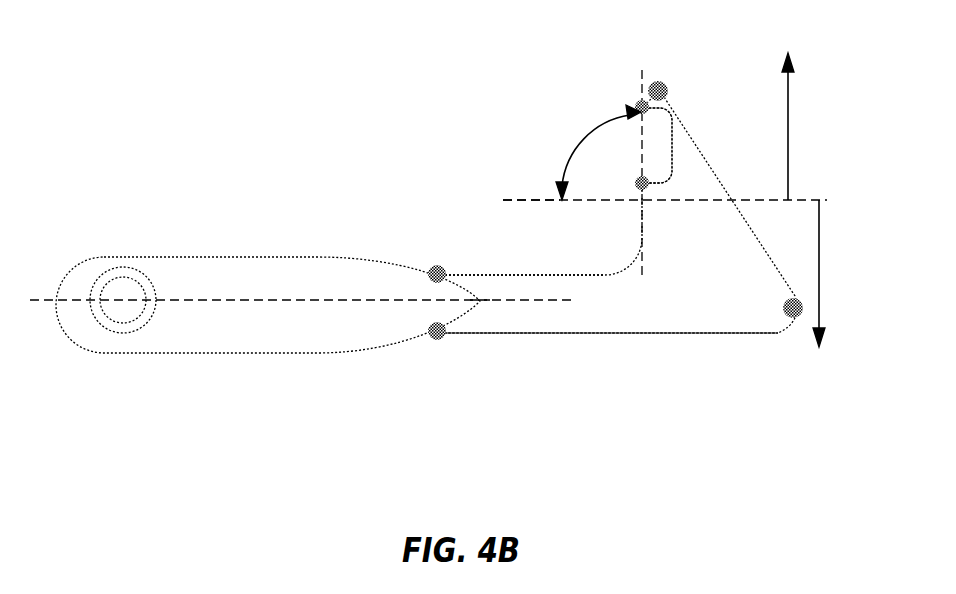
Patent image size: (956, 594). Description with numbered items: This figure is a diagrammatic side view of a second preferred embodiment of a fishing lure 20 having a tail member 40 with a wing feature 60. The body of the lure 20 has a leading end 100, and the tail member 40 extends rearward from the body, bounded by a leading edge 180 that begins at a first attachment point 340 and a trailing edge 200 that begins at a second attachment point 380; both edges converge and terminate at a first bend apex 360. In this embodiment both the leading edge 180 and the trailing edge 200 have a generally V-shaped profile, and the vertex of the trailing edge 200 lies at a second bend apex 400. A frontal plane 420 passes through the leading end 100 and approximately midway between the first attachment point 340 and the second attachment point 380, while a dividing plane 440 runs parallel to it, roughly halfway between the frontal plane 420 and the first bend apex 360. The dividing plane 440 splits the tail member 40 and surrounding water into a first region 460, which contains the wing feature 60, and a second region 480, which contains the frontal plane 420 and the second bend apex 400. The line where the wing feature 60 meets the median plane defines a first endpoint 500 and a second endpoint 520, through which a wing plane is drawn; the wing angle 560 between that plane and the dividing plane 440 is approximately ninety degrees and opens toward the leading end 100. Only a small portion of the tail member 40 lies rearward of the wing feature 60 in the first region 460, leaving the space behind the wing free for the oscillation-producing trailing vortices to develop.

The fishing lure 20 is at (308, 158).
The tail member 40 is at (651, 337).
The wing feature 60 is at (655, 152).
The leading end 100 is at (70, 292).
The leading edge 180 is at (549, 275).
The trailing edge 200 is at (732, 178).
The first attachment point 340 is at (438, 268).
The first bend apex 360 is at (660, 84).
The second attachment point 380 is at (437, 337).
The second bend apex 400 is at (797, 318).
The frontal plane 420 is at (492, 300).
The dividing plane 440 is at (515, 200).
The first region 460 is at (786, 92).
The second region 480 is at (818, 232).
The first endpoint 500 is at (638, 183).
The second endpoint 520 is at (640, 103).
The wing angle 560 is at (575, 150).